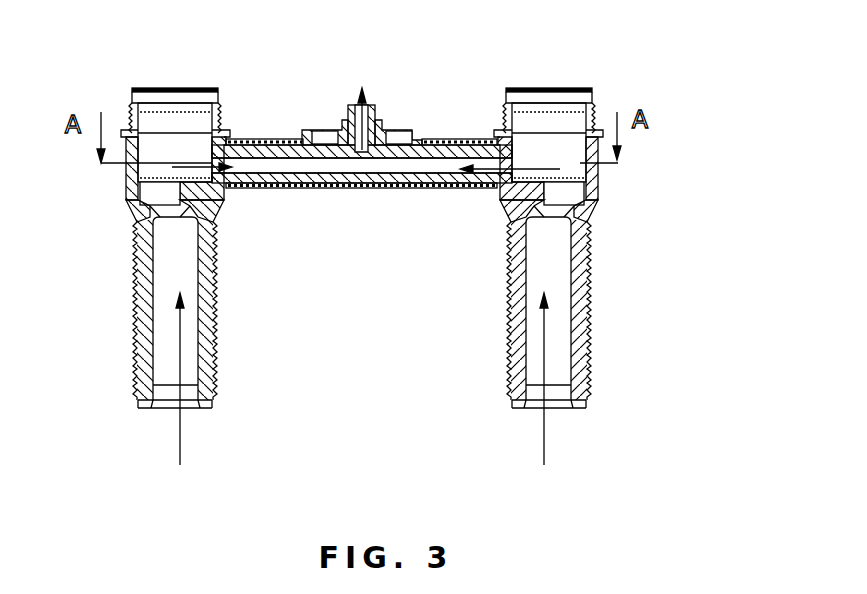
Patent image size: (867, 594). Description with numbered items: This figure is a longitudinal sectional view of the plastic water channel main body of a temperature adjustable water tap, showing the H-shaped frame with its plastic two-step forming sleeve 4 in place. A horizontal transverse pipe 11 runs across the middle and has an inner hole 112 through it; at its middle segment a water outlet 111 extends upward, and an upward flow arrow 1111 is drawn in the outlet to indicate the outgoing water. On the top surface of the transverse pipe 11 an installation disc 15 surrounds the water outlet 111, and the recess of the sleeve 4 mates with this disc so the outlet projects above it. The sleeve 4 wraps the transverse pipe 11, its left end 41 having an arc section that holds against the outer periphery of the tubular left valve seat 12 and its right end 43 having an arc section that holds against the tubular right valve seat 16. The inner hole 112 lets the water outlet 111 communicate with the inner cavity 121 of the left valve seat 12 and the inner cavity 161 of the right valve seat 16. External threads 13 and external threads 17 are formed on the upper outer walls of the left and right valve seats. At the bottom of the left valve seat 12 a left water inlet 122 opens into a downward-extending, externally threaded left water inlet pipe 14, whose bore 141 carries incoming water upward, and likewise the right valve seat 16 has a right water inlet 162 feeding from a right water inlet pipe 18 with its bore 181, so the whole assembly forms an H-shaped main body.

The two-step forming sleeve 4 is at (379, 178).
The left end 41 is at (246, 140).
The right end 43 is at (497, 187).
The transverse pipe 11 is at (450, 152).
The inner hole 112 is at (305, 177).
The installation disc 15 is at (306, 135).
The water outlet 111 is at (378, 118).
The outlet channel 1111 is at (362, 87).
The left valve seat 12 is at (131, 178).
The inner cavity 121 is at (176, 122).
The external threads 13 is at (134, 113).
The left water inlet 122 is at (133, 232).
The left water inlet pipe 14 is at (140, 342).
The left inlet channel 141 is at (165, 268).
The right valve seat 16 is at (598, 185).
The inner cavity 161 is at (553, 143).
The external threads 17 is at (598, 112).
The right water inlet 162 is at (577, 210).
The right water inlet pipe 18 is at (590, 345).
The right inlet channel 181 is at (556, 282).